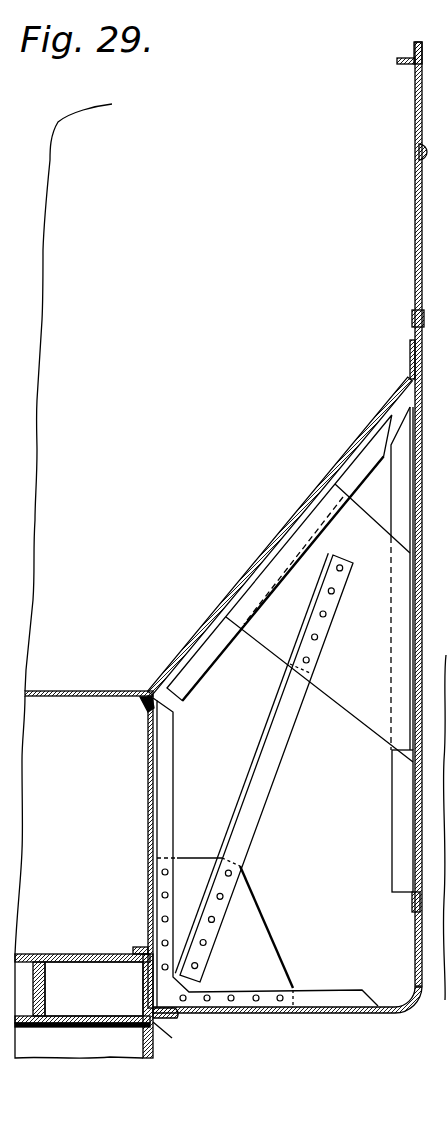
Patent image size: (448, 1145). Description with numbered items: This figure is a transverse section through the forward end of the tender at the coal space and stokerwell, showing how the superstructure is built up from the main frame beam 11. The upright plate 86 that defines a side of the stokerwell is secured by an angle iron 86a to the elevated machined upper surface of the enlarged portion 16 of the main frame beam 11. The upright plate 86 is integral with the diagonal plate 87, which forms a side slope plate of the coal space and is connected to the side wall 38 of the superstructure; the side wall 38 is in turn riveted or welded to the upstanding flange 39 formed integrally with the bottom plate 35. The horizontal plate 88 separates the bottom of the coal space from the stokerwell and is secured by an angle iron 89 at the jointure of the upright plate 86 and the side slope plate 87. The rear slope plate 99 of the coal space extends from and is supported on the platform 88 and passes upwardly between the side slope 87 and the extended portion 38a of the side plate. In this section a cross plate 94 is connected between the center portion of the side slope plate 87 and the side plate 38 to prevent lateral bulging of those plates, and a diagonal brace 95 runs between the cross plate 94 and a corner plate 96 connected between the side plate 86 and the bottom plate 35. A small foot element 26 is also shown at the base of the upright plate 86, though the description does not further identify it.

The main frame beam 11 is at (160, 1049).
The enlarged portion of the main frame beam 16 is at (92, 933).
The foot flange 26 is at (177, 1018).
The bottom plate 35 is at (282, 1013).
The side wall 38 is at (417, 808).
The extended portion of the side plate 38a is at (415, 218).
The upstanding flange 39 is at (417, 928).
The upright plate 86 is at (147, 797).
The angle iron 86a is at (147, 950).
The diagonal plate 87 is at (252, 570).
The horizontal plate 88 is at (62, 690).
The angle iron 89 is at (143, 700).
The cross plate 94 is at (350, 676).
The diagonal brace 95 is at (268, 760).
The corner plate 96 is at (248, 925).
The rear slope plate 99 is at (141, 177).